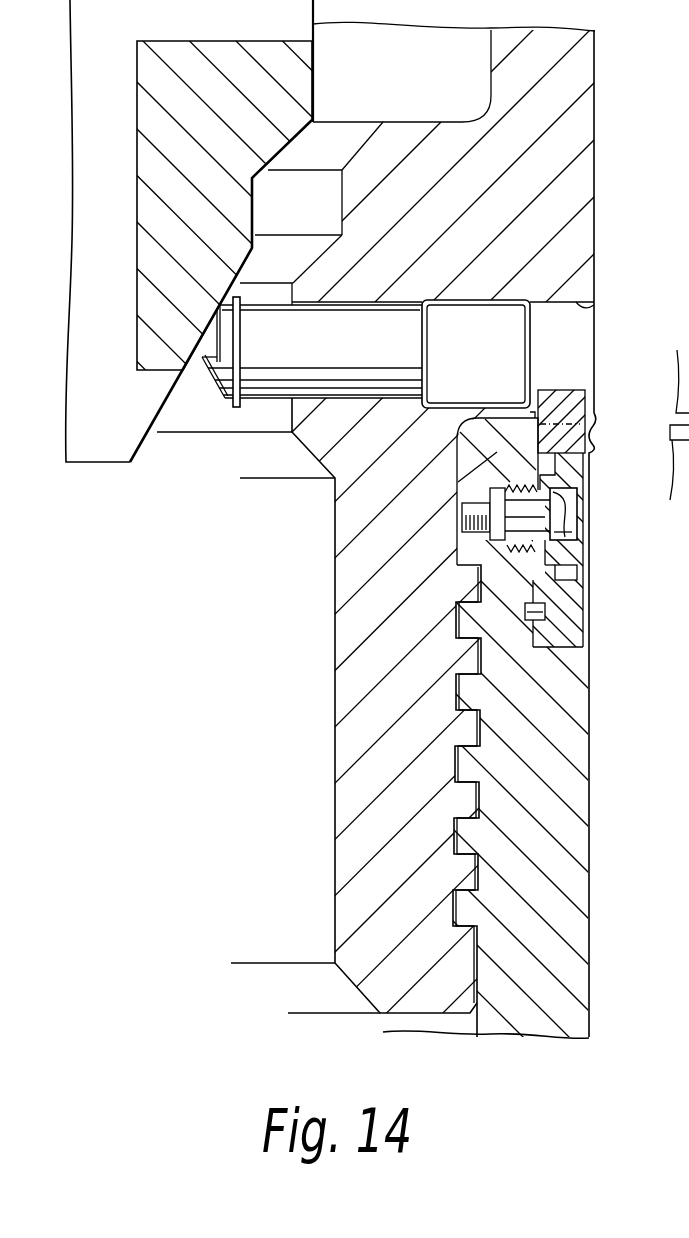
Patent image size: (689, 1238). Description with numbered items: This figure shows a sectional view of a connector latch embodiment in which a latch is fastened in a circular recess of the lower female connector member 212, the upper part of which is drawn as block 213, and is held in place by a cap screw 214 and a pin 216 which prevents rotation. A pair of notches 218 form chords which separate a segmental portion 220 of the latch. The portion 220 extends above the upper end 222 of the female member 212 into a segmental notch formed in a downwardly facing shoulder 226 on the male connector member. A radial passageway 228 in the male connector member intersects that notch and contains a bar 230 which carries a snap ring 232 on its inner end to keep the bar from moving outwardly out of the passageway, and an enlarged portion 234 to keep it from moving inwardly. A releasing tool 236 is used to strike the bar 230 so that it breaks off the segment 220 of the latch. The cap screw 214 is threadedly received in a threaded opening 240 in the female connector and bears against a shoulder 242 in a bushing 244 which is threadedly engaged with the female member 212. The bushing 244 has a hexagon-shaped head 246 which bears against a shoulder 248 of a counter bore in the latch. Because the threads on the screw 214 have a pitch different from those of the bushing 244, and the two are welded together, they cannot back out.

The lower female connector member 212 is at (568, 769).
The upper body block 213 is at (580, 72).
The cap screw 214 is at (572, 504).
The pin 216 is at (548, 613).
The notches 218 is at (540, 434).
The segmental portion 220 is at (566, 390).
The upper end of the female member 222 is at (470, 462).
The downwardly facing shoulder 226 is at (598, 394).
The radial passageway 228 is at (578, 305).
The bar 230 is at (355, 346).
The snap ring 232 is at (236, 408).
The enlarged portion 234 is at (494, 344).
The releasing tool 236 is at (315, 71).
The threaded opening 240 is at (478, 503).
The shoulder 242 is at (577, 521).
The bushing 244 is at (520, 488).
The hexagon-shaped head 246 is at (577, 552).
The shoulder of a counter bore 248 is at (578, 570).